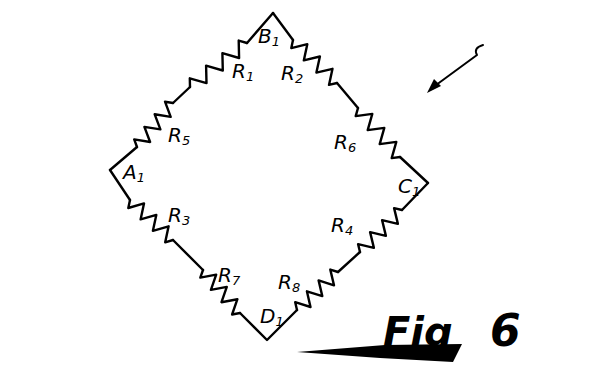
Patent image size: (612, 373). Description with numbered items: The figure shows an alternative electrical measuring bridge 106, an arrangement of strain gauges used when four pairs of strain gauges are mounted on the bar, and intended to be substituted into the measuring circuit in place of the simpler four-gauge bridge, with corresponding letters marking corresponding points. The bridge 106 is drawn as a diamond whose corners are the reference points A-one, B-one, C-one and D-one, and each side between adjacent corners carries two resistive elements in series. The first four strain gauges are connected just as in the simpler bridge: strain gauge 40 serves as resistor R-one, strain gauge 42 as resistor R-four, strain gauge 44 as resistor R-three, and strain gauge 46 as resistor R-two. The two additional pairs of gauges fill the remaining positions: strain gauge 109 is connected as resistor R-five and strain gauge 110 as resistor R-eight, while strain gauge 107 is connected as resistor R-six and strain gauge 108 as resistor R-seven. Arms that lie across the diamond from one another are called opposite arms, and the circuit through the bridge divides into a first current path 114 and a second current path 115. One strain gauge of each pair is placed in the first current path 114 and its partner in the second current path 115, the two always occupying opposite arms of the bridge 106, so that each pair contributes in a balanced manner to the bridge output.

The strain gauge 40 is at (247, 43).
The strain gauge 42 is at (398, 215).
The strain gauge 44 is at (308, 47).
The strain gauge 46 is at (130, 200).
The bridge 106 is at (480, 58).
The strain gauge 107 is at (388, 130).
The strain gauge 108 is at (206, 282).
The strain gauge 109 is at (160, 112).
The strain gauge 110 is at (303, 308).
The first current path 114 is at (190, 87).
The second current path 115 is at (347, 90).